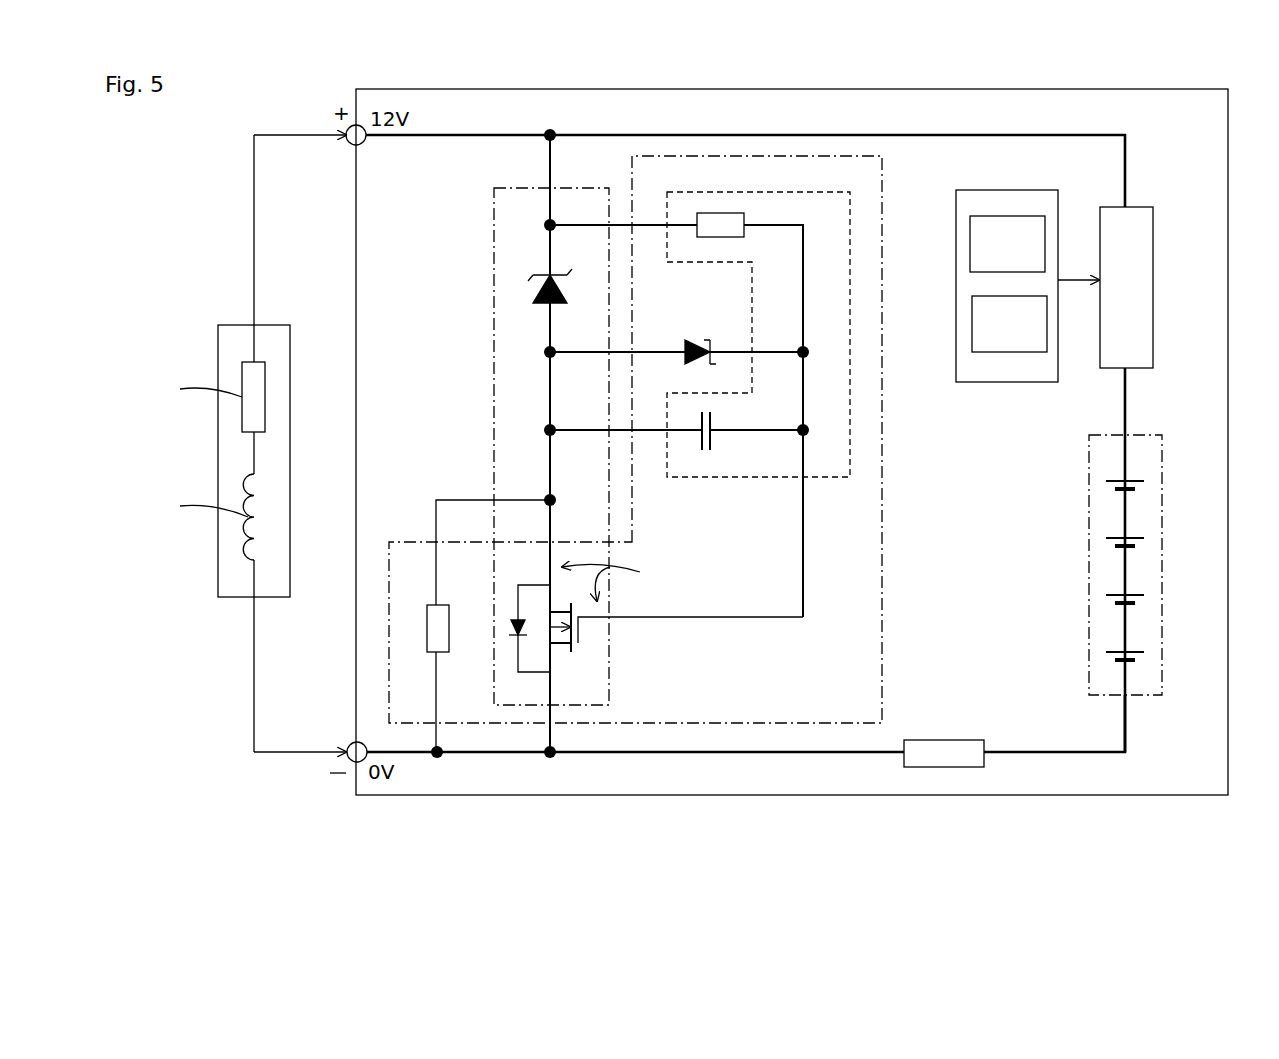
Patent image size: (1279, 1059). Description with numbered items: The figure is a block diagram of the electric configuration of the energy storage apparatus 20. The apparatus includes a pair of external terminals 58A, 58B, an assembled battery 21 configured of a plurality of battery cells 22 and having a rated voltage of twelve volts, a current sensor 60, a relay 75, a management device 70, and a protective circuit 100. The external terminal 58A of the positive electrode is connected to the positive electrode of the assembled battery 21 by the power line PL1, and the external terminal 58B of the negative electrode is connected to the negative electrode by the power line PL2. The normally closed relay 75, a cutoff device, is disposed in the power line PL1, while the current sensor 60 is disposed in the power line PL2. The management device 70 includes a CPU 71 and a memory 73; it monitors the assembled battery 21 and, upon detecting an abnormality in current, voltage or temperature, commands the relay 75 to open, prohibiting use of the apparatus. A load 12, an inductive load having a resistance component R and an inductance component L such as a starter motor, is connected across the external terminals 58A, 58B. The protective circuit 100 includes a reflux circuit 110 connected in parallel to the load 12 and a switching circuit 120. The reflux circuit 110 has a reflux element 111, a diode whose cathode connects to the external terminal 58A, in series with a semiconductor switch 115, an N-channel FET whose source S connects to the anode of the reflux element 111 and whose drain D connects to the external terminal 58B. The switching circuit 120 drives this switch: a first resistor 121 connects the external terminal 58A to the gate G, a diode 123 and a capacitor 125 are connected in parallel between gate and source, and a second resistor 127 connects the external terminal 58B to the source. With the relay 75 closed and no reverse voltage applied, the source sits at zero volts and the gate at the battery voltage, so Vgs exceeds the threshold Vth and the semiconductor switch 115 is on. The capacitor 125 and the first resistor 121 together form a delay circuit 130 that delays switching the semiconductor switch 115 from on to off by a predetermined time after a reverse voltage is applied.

The energy storage apparatus 20 is at (940, 89).
The load 12 is at (218, 345).
The external terminal of the positive electrode 58A is at (350, 142).
The external terminal of the negative electrode 58B is at (350, 746).
The power line of the positive electrode PL1 is at (1005, 135).
The power line of the negative electrode PL2 is at (735, 752).
The current sensor 60 is at (944, 767).
The management device 70 is at (979, 271).
The CPU 71 is at (970, 245).
The memory 73 is at (972, 325).
The relay 75 is at (1143, 237).
The assembled battery 21 is at (1156, 549).
The battery cell 22 is at (1144, 486).
The protective circuit 100 is at (667, 485).
The reflux circuit 110 is at (620, 483).
The reflux element 111 is at (535, 298).
The semiconductor switch 115 is at (656, 633).
The switching circuit 120 is at (667, 465).
The first resistor 121 is at (720, 218).
The diode 123 is at (688, 345).
The capacitor 125 is at (706, 452).
The second resistor 127 is at (432, 633).
The delay circuit 130 is at (748, 358).